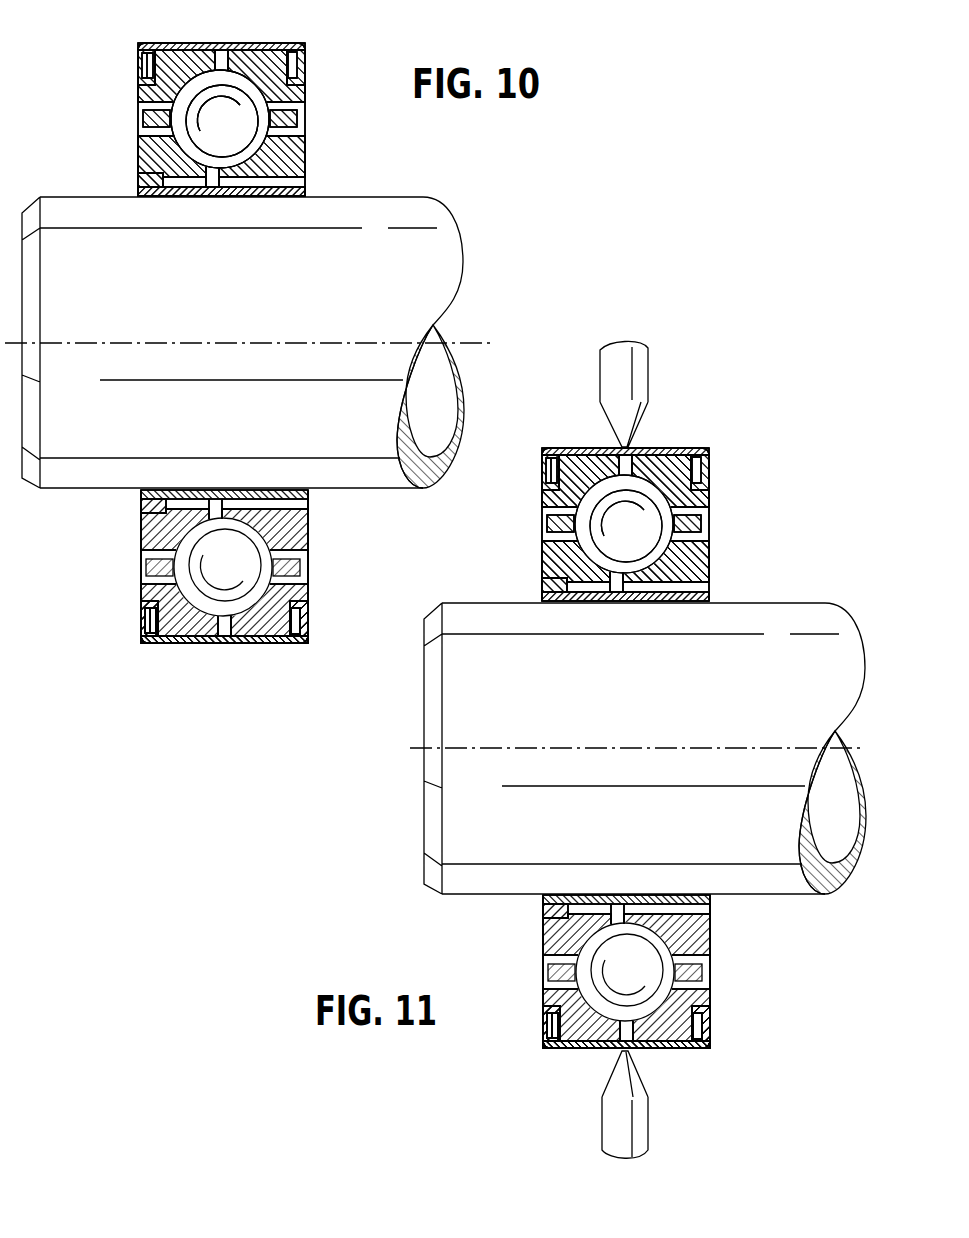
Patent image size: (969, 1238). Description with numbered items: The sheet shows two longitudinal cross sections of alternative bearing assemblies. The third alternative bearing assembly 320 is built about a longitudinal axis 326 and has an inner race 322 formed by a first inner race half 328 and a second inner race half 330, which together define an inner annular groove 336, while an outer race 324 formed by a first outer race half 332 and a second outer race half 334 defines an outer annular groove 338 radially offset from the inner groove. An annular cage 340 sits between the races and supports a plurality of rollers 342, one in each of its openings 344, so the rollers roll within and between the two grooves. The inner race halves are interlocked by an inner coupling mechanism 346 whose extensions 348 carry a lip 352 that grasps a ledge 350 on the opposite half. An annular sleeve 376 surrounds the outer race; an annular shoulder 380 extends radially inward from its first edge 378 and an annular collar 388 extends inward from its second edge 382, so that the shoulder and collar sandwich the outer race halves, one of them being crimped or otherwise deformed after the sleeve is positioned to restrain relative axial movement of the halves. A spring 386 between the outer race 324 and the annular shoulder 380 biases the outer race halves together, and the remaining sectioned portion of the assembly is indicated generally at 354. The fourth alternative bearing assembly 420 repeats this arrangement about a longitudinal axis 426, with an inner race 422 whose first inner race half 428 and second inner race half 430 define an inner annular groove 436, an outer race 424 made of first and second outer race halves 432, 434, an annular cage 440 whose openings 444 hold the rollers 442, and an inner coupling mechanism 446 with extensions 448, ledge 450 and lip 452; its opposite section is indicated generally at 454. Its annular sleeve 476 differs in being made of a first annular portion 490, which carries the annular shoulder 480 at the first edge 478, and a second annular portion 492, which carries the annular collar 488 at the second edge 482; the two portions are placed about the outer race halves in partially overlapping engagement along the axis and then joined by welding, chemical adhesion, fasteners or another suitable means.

In FIG. 10, the bearing assembly 320 is at (306, 47).
In FIG. 10, the inner race 322 is at (312, 162).
In FIG. 10, the outer race 324 is at (299, 72).
In FIG. 10, the longitudinal axis 326 is at (460, 338).
In FIG. 10, the first inner race half 328 is at (303, 170).
In FIG. 10, the second inner race half 330 is at (147, 160).
In FIG. 10, the first outer race half 332 is at (255, 57).
In FIG. 10, the second outer race half 334 is at (146, 46).
In FIG. 10, the inner annular groove 336 is at (214, 175).
In FIG. 10, the outer annular groove 338 is at (207, 72).
In FIG. 10, the annular cage 340 is at (298, 118).
In FIG. 10, the rollers 342 is at (200, 107).
In FIG. 10, the openings 344 is at (178, 147).
In FIG. 10, the inner coupling mechanism 346 is at (172, 182).
In FIG. 10, the extensions 348 is at (246, 197).
In FIG. 10, the ledge 350 is at (140, 527).
In FIG. 10, the lip 352 is at (140, 495).
In FIG. 10, the bearing assembly 354 is at (176, 650).
In FIG. 10, the annular sleeve 376 is at (235, 648).
In FIG. 10, the first edge 378 is at (145, 644).
In FIG. 10, the annular shoulder 380 is at (140, 624).
In FIG. 10, the second edge 382 is at (293, 647).
In FIG. 10, the spring 386 is at (140, 608).
In FIG. 10, the annular collar 388 is at (300, 628).
In FIG. 11, the bearing assembly 420 is at (717, 447).
In FIG. 11, the inner race 422 is at (716, 565).
In FIG. 11, the outer race 424 is at (706, 476).
In FIG. 11, the longitudinal axis 426 is at (735, 745).
In FIG. 11, the first inner race half 428 is at (700, 582).
In FIG. 11, the second inner race half 430 is at (550, 572).
In FIG. 11, the first outer race half 432 is at (693, 466).
In FIG. 11, the second outer race half 434 is at (578, 472).
In FIG. 11, the inner annular groove 436 is at (621, 575).
In FIG. 11, the annular cage 440 is at (697, 527).
In FIG. 11, the rollers 442 is at (607, 512).
In FIG. 11, the openings 444 is at (583, 530).
In FIG. 11, the inner coupling mechanism 446 is at (602, 604).
In FIG. 11, the extensions 448 is at (650, 487).
In FIG. 11, the ledge 450 is at (568, 923).
In FIG. 11, the lip 452 is at (542, 905).
In FIG. 11, the bearing assembly 454 is at (580, 1075).
In FIG. 11, the annular sleeve 476 is at (652, 1053).
In FIG. 11, the first edge 478 is at (543, 1044).
In FIG. 11, the annular shoulder 480 is at (542, 1025).
In FIG. 11, the second edge 482 is at (700, 1048).
In FIG. 11, the annular collar 488 is at (708, 1035).
In FIG. 11, the first annular portion 490 is at (557, 1047).
In FIG. 11, the second annular portion 492 is at (685, 1052).